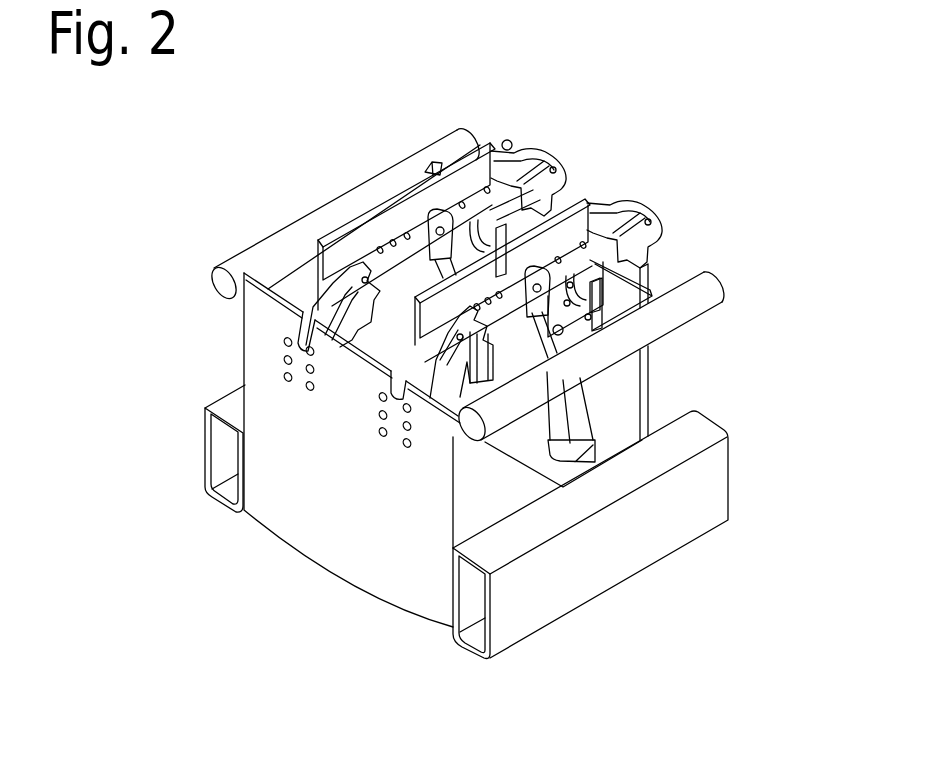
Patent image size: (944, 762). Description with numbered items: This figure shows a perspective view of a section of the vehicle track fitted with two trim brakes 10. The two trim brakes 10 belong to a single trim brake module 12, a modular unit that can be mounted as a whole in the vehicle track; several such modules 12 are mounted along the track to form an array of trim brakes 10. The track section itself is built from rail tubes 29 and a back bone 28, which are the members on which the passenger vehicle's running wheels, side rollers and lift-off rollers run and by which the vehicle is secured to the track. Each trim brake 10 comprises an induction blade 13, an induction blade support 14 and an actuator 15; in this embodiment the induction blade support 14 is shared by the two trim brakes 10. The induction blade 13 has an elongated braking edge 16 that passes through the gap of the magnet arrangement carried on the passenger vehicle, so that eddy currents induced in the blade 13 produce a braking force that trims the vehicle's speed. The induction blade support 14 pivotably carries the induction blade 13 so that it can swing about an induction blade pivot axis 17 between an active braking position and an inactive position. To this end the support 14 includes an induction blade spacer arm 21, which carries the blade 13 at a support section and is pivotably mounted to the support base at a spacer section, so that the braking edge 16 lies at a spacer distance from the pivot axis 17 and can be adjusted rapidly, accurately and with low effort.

The trim brake module 12 is at (242, 192).
The trim brake 10 is at (557, 148).
The induction blade spacer arm 21 is at (510, 153).
The elongated braking edge 16 is at (575, 190).
The induction blade 13 is at (618, 195).
The induction blade pivot axis 17 is at (670, 223).
The induction blade support 14 is at (663, 270).
The rail tubes 29 is at (690, 303).
The actuator 15 is at (593, 410).
The back bone 28 is at (705, 493).